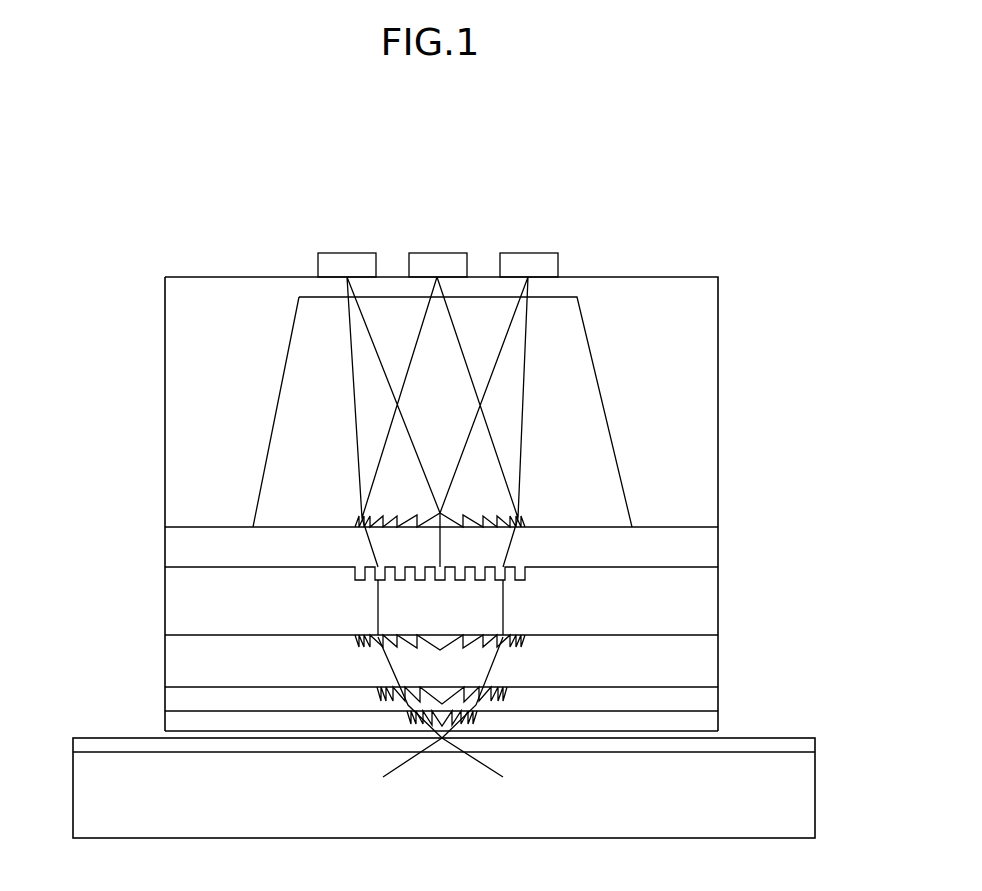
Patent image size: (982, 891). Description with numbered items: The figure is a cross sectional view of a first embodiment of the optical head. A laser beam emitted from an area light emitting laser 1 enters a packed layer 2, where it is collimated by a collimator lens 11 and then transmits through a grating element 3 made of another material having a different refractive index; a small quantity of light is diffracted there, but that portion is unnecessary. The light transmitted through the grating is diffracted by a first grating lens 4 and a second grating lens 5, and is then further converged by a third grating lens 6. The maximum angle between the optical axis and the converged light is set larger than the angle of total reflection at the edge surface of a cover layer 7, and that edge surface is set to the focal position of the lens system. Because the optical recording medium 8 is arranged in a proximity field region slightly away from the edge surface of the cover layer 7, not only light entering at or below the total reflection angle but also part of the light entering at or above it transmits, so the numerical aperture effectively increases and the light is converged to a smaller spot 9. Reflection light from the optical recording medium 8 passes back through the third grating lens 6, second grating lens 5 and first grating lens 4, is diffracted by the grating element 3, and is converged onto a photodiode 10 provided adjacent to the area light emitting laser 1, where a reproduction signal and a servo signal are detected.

The area light emitting laser 1 is at (437, 252).
The photodiode 10 is at (527, 212).
The packed layer 2 is at (573, 333).
The collimator lens 11 is at (527, 515).
The grating element 3 is at (527, 567).
The first grating lens 4 is at (527, 635).
The second grating lens 5 is at (507, 687).
The third grating lens 6 is at (477, 713).
The cover layer 7 is at (707, 718).
The optical recording medium 8 is at (807, 790).
The spot 9 is at (445, 752).